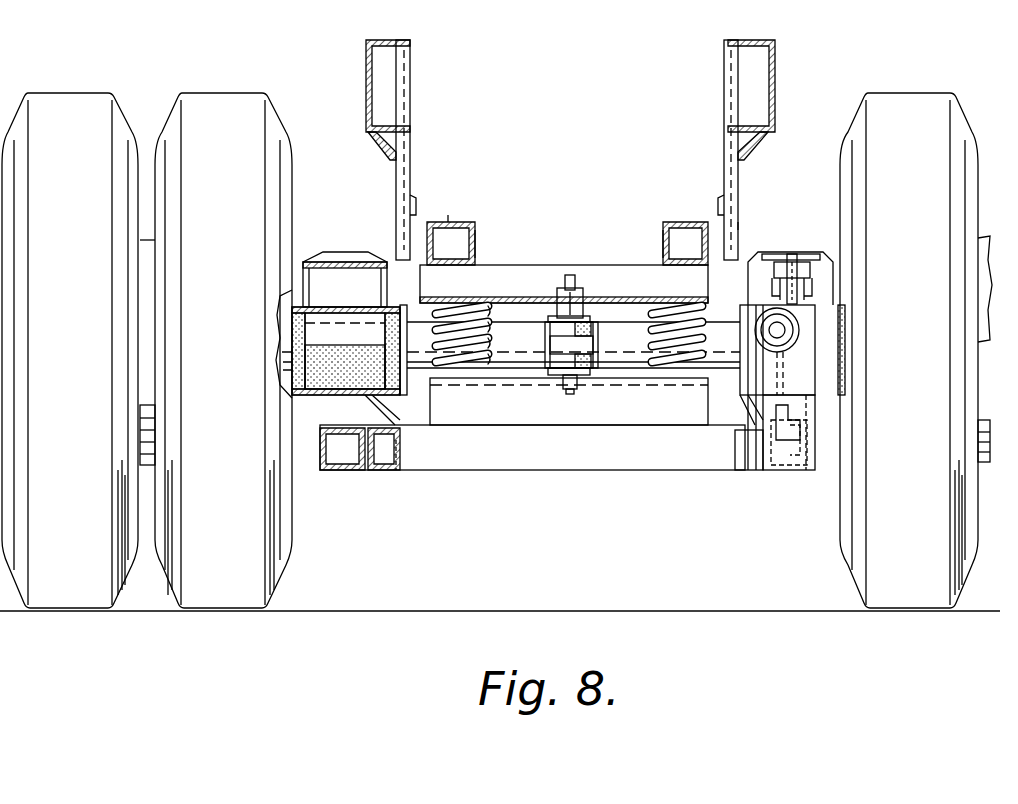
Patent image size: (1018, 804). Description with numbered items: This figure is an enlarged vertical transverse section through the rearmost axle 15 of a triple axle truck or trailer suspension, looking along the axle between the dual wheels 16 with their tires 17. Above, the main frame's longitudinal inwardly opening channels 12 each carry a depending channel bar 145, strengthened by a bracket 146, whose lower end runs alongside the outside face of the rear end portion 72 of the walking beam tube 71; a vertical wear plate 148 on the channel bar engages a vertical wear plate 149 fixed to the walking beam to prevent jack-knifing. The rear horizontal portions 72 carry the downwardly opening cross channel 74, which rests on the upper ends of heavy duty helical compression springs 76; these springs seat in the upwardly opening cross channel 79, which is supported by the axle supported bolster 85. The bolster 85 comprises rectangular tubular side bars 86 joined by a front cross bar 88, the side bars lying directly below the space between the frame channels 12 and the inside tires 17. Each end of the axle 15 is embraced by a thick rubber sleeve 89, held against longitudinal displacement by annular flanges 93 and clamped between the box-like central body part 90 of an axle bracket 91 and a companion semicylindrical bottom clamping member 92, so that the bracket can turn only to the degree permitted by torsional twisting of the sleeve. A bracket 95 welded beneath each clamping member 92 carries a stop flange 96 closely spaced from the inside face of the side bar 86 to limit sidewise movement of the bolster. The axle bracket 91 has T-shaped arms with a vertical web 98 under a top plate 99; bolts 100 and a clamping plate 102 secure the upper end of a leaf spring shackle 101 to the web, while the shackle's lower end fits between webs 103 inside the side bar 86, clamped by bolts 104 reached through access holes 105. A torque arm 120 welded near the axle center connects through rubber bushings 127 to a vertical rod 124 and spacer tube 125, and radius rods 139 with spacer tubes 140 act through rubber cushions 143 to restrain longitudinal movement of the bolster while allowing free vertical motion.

The inwardly opening channel 12 is at (366, 50).
The rear axle 15 is at (622, 325).
The dual wheels 16 is at (178, 100).
The tire 17 is at (46, 102).
The tube 71 is at (456, 222).
The lower rear end portion 72 is at (476, 230).
The downwardly opening horizontal cross channel 74 is at (612, 268).
The heavy duty helical compression spring 76 is at (464, 312).
The upwardly opening cross channel 79 is at (638, 416).
The bolster 85 is at (630, 480).
The side bar 86 is at (322, 474).
The front cross bar 88 is at (540, 470).
The rubber sleeve 89 is at (370, 336).
The central body part 90 is at (334, 272).
The axle bracket 91 is at (300, 244).
The bottom clamping member 92 is at (300, 400).
The annular flange 93 is at (277, 338).
The bracket 95 is at (395, 416).
The stop flange 96 is at (400, 474).
The vertical web 98 is at (788, 254).
The top plate 99 is at (356, 258).
The bolt 100 is at (812, 270).
The leaf spring shackle 101 is at (820, 296).
The clamping plate 102 is at (818, 262).
The web 103 is at (800, 472).
The bolt 104 is at (806, 448).
The access hole 105 is at (800, 432).
The torque arm 120 is at (550, 336).
The vertical rod 124 is at (570, 275).
The spacer tube 125 is at (558, 296).
The rubber bushing 127 is at (563, 384).
The radius rod 139 is at (820, 360).
The spacer tube 140 is at (796, 340).
The rubber cushion 143 is at (800, 332).
The depending channel bar 145 is at (410, 91).
The bracket 146 is at (388, 156).
The vertical wear plate 148 is at (418, 200).
The vertical wear plate 149 is at (448, 215).